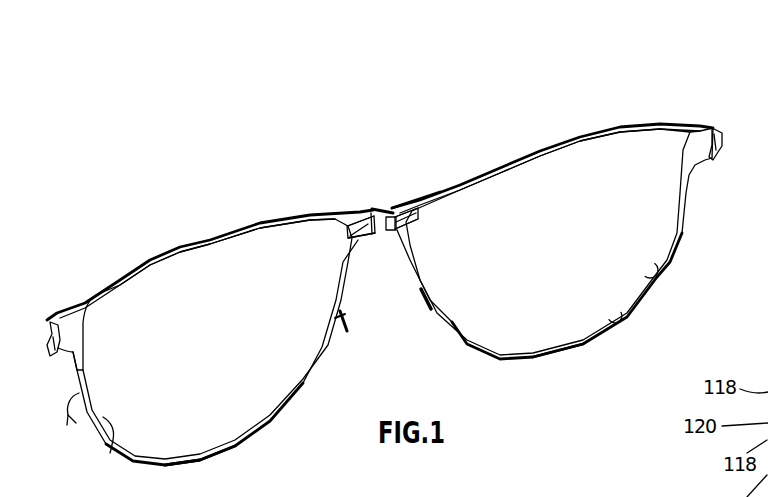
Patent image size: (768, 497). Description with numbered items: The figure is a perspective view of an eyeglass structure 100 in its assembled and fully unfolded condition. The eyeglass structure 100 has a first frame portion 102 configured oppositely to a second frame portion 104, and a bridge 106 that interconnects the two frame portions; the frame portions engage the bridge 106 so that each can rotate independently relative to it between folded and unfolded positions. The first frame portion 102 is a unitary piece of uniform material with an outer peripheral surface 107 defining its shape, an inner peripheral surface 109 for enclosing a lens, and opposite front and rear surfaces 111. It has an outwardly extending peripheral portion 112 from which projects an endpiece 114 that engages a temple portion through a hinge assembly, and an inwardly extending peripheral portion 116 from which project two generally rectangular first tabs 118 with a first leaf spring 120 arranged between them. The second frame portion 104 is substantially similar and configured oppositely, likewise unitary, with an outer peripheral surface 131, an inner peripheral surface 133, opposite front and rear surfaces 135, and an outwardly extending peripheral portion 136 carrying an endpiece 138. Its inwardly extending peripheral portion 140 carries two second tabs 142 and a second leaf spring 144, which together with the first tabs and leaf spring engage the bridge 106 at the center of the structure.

The eyeglass structure 100 is at (481, 118).
The first frame portion 102 is at (160, 243).
The second frame portion 104 is at (646, 110).
The bridge 106 is at (378, 210).
The outer peripheral surface 107 is at (205, 456).
The inner peripheral surface 109 is at (110, 453).
The front and rear surfaces 111 is at (70, 414).
The outwardly extending peripheral portion 112 is at (75, 318).
The endpiece 114 is at (50, 326).
The inwardly extending peripheral portion 116 is at (333, 218).
The first tabs 118 is at (360, 213).
The first leaf spring 120 is at (365, 230).
The outer peripheral surface 131 is at (563, 352).
The inner peripheral surface 133 is at (623, 320).
The front and rear surfaces 135 is at (657, 282).
The outwardly extending peripheral portion 136 is at (697, 142).
The endpiece 138 is at (720, 161).
The inwardly extending peripheral portion 140 is at (425, 200).
The second tabs 142 is at (410, 193).
The second leaf spring 144 is at (405, 215).